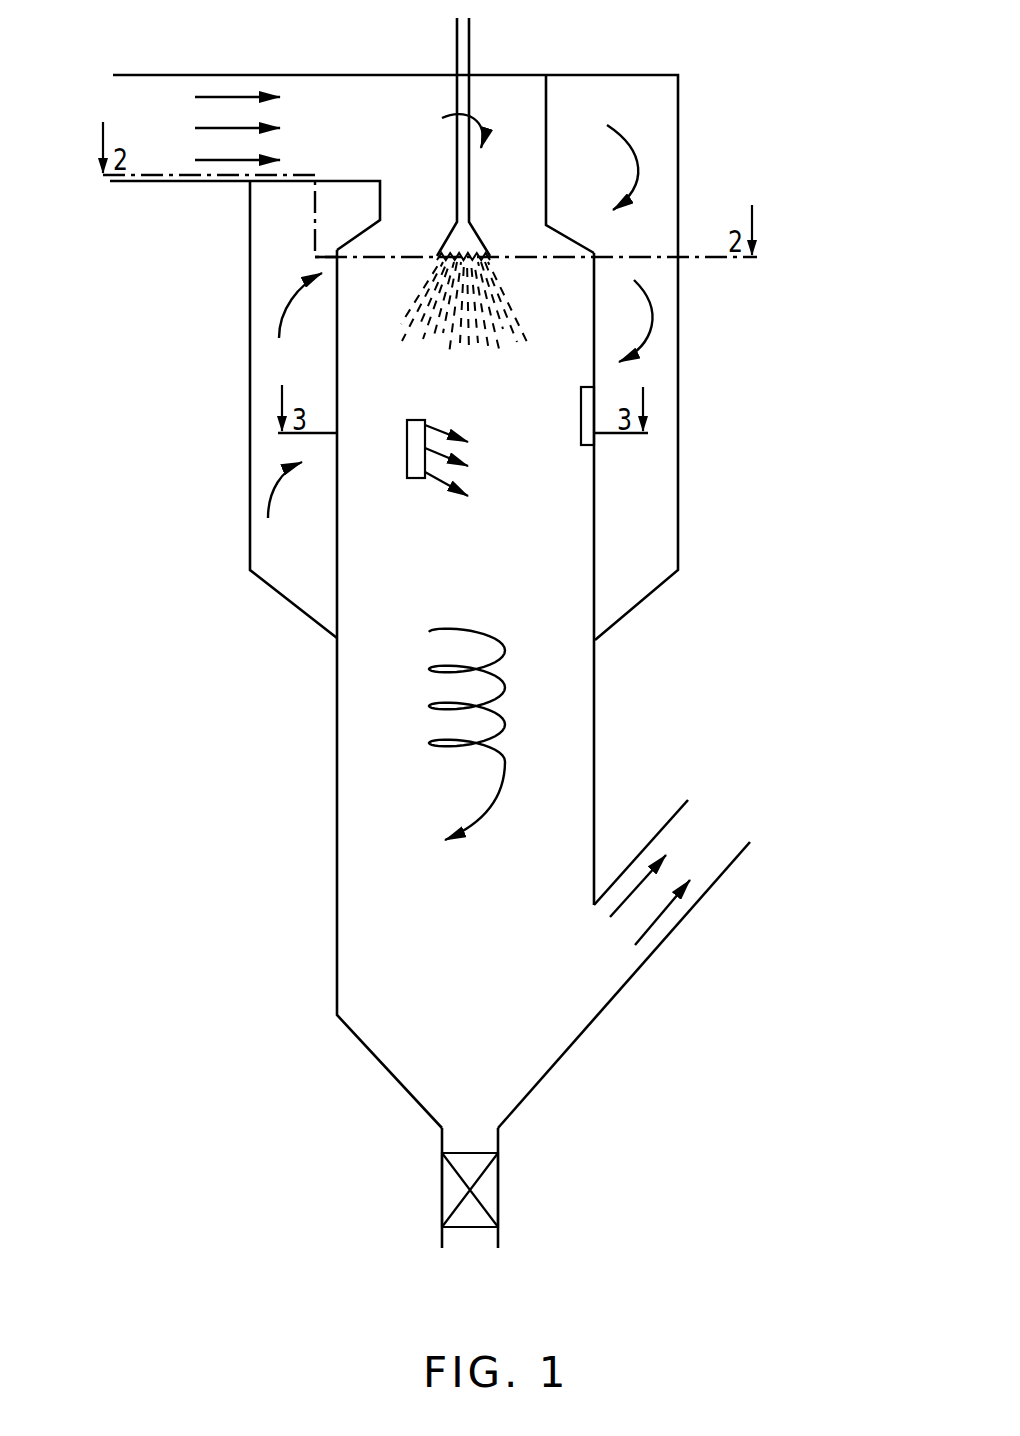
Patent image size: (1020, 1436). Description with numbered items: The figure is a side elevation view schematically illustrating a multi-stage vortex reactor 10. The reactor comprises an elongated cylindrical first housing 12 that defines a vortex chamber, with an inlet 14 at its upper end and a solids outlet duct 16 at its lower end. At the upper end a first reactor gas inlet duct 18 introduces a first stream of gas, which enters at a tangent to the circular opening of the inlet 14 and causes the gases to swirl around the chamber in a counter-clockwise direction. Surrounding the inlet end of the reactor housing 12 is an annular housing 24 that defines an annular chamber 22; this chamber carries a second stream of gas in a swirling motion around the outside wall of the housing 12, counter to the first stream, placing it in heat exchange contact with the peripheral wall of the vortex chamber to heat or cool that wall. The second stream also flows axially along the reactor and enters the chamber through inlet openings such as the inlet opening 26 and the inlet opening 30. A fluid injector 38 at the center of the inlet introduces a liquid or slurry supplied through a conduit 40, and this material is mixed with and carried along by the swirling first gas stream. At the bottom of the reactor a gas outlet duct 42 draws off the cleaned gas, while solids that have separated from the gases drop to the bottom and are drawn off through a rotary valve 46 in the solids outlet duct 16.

The multi-stage vortex reactor 10 is at (248, 657).
The first housing 12 is at (596, 738).
The inlet 14 is at (528, 178).
The outlet duct 16 is at (487, 1143).
The first reactor gas inlet duct 18 is at (155, 165).
The annular chamber 22 is at (666, 525).
The annular housing 24 is at (678, 225).
The inlet opening 26 is at (592, 440).
The inlet opening 30 is at (410, 437).
The fluid injector 38 is at (468, 246).
The conduit 40 is at (468, 45).
The gas outlet duct 42 is at (710, 870).
The rotary valve 46 is at (482, 1218).